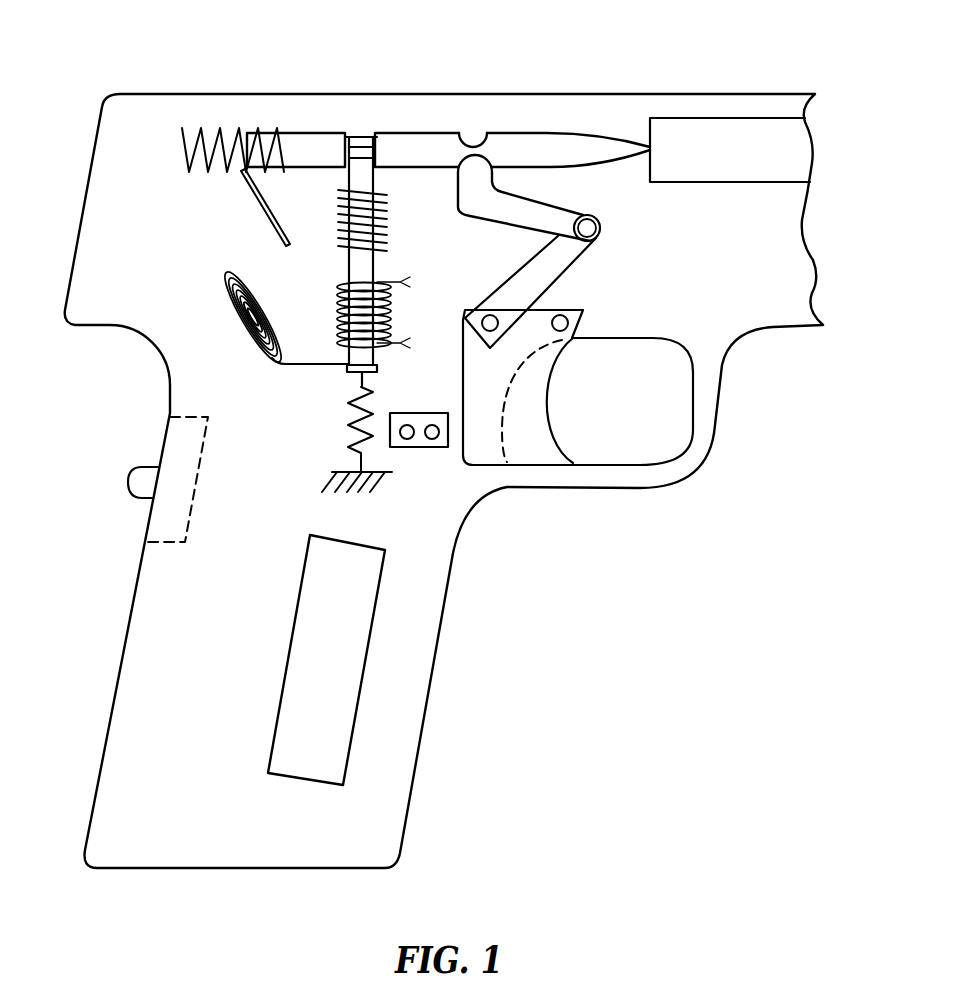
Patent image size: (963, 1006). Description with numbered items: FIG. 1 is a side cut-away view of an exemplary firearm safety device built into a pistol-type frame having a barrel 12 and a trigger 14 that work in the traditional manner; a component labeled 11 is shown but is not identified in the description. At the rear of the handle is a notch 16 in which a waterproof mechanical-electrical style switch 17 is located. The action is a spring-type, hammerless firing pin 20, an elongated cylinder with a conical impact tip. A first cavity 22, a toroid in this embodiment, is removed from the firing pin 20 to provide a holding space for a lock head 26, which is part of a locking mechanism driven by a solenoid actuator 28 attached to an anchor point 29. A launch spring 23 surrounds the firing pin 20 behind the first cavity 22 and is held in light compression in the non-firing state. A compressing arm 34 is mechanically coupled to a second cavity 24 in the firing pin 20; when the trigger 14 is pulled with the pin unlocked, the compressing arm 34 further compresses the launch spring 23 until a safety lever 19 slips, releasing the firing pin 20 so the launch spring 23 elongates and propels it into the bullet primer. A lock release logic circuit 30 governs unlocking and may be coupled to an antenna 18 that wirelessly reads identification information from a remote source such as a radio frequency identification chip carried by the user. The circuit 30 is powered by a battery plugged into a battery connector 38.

The frame / housing 11 is at (407, 812).
The barrel 12 is at (720, 135).
The trigger 14 is at (537, 408).
The notch 16 is at (160, 530).
The waterproof mechanical-electrical style switch 17 is at (137, 468).
The antenna 18 is at (222, 283).
The safety lever 19 is at (257, 195).
The firing pin 20 is at (418, 142).
The first cavity 22 is at (352, 135).
The launch spring 23 is at (205, 132).
The second cavity 24 is at (473, 143).
The lock head 26 is at (370, 137).
The solenoid actuator 28 is at (385, 282).
The anchor point 29 is at (330, 478).
The lock release logic circuit 30 is at (355, 653).
The compressing arm 34 is at (555, 257).
The battery connector 38 is at (422, 447).